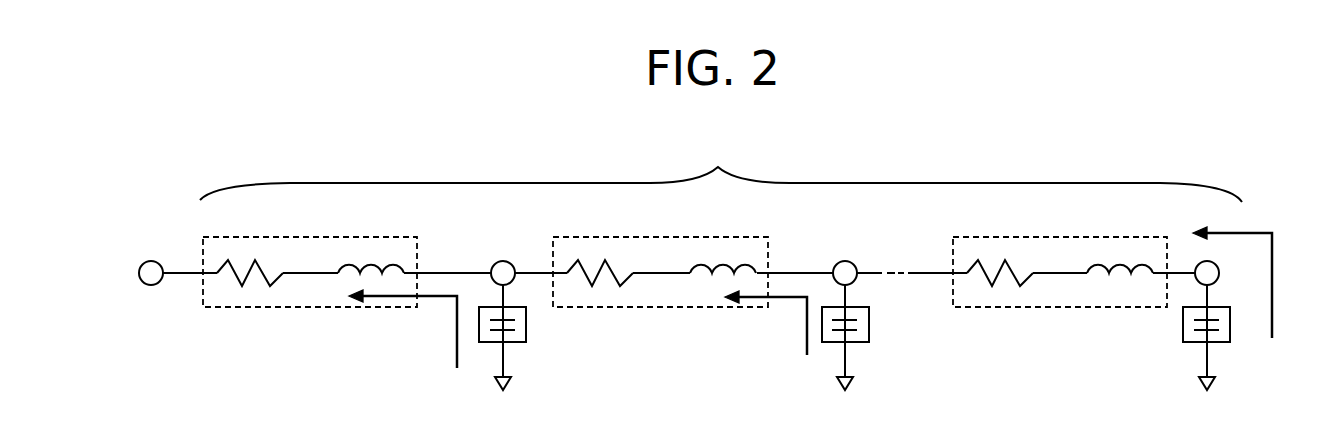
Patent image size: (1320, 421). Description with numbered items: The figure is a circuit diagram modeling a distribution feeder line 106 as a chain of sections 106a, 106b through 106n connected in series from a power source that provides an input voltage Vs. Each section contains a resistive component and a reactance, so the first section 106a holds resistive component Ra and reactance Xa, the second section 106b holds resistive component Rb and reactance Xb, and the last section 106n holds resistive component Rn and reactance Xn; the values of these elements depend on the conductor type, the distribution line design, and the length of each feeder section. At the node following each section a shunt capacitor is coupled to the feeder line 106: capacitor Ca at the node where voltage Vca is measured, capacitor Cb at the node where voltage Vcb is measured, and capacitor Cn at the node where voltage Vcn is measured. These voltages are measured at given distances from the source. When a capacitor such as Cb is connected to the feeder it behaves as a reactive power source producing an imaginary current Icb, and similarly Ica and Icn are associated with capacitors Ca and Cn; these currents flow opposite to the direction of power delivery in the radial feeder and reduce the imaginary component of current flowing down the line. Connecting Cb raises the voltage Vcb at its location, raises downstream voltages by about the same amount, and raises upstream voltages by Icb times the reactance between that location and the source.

The feeder line 106 is at (721, 166).
The feeder line section 106a is at (203, 307).
The feeder line section 106b is at (670, 307).
The feeder line section 106n is at (1010, 307).
The input voltage Vs is at (149, 253).
The resistive component Ra is at (240, 262).
The reactance Xa is at (360, 268).
The capacitor voltage Vca is at (498, 263).
The capacitor Ca is at (518, 343).
The capacitor current Ica is at (403, 330).
The resistive component Rb is at (597, 263).
The reactance Xb is at (712, 263).
The capacitor voltage Vcb is at (840, 262).
The capacitor Cb is at (857, 343).
The capacitor current Icb is at (766, 339).
The resistive component Rn is at (1017, 263).
The reactance Xn is at (1110, 263).
The capacitor voltage Vcn is at (1237, 265).
The capacitor Cn is at (1213, 343).
The capacitor current Icn is at (1253, 302).